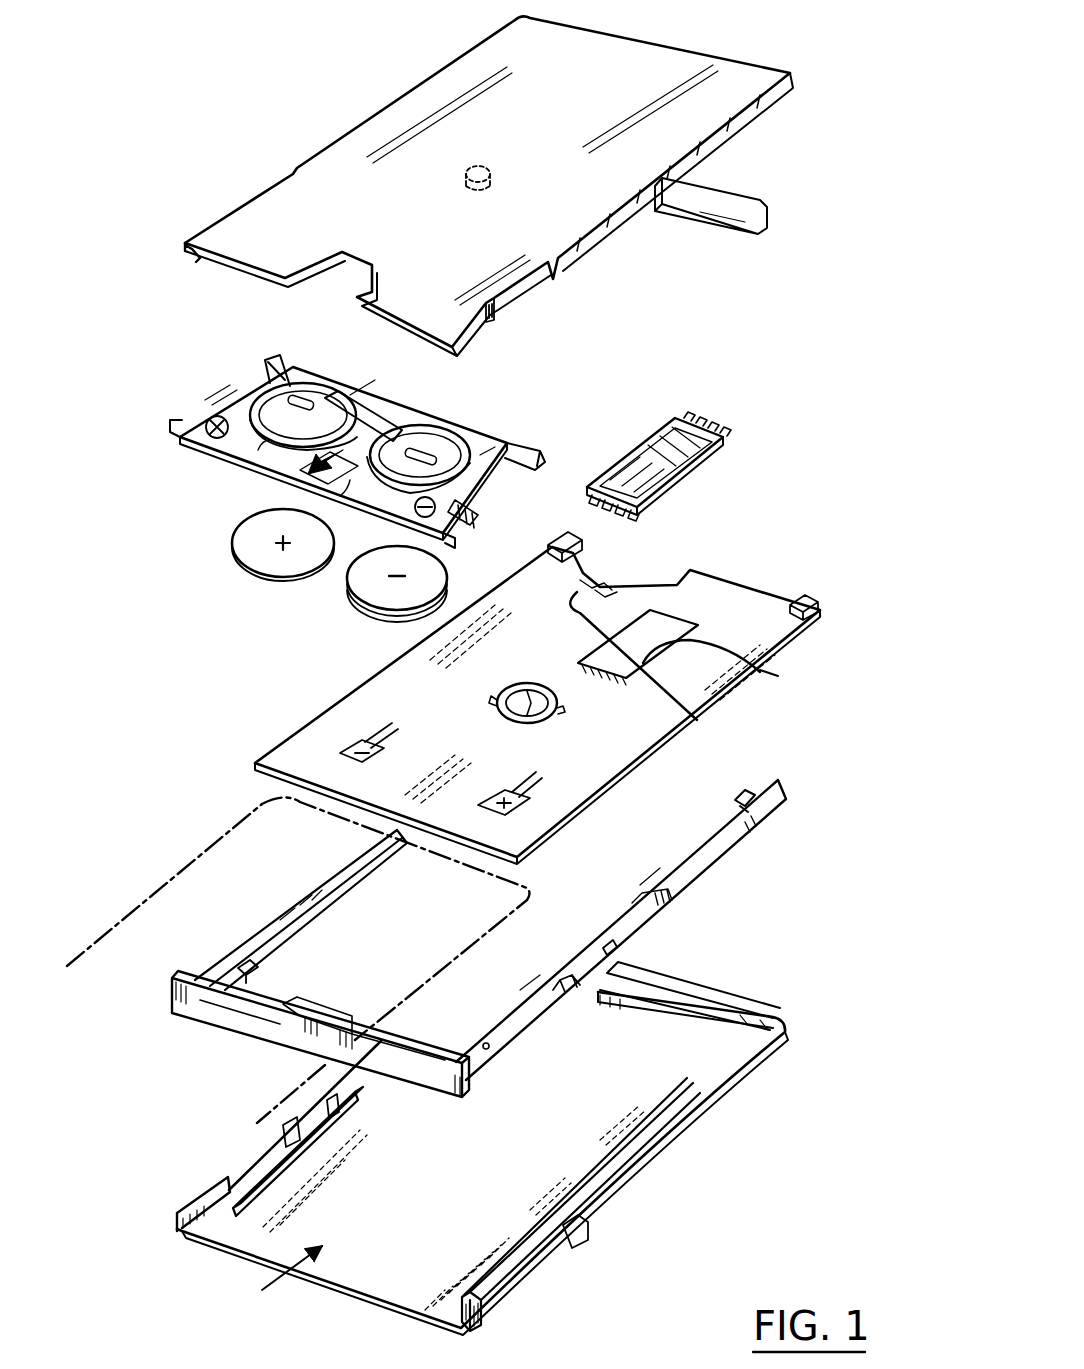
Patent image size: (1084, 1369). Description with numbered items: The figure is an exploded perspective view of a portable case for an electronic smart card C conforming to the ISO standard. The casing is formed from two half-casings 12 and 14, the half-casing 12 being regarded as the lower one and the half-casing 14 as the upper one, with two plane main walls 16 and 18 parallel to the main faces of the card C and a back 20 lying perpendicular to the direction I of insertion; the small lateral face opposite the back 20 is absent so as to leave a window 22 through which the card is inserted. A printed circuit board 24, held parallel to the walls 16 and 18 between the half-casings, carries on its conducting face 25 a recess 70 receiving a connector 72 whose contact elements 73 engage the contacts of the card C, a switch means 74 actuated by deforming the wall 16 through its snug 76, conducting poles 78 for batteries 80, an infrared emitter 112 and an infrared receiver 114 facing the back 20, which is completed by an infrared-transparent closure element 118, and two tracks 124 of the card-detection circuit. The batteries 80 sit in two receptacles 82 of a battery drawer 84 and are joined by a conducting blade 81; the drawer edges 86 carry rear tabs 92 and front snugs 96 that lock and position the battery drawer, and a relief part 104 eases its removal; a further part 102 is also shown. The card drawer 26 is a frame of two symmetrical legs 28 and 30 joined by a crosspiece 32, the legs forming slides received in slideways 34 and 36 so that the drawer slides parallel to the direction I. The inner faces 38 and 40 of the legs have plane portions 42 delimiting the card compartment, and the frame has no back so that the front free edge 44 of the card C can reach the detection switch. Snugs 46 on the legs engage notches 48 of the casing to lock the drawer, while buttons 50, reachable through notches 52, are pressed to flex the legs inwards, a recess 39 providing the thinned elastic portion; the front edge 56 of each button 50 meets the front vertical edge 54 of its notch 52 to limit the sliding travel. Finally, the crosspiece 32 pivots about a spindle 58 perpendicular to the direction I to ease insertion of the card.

The half-casing 12 is at (764, 113).
The half-casing 14 is at (747, 1074).
The plane main wall 16 is at (660, 62).
The plane main wall 18 is at (667, 1037).
The back 20 is at (737, 1022).
The window 22 is at (186, 262).
The printed circuit board 24 is at (278, 737).
The conducting face 25 is at (412, 680).
The drawer 26 is at (193, 1030).
The leg 28 is at (693, 872).
The leg 30 is at (255, 942).
The crosspiece 32 is at (277, 1028).
The slideway 34 is at (648, 1137).
The slideway 36 is at (348, 1110).
The inner face of leg 38 is at (663, 878).
The recess 39 is at (528, 992).
The inner face of leg 40 is at (266, 963).
The plane portions 42 is at (752, 790).
The front free edge 44 is at (338, 818).
The snugs 46 is at (620, 945).
The notches 48 is at (300, 1130).
The buttons 50 is at (590, 1000).
The notches 52 is at (538, 293).
The front vertical edge 54 is at (496, 322).
The front edge 56 is at (553, 997).
The pivoting spindle 58 is at (486, 1050).
The recess 70 is at (697, 720).
The connector 72 is at (697, 468).
The contact elements 73 is at (640, 450).
The switch means 74 is at (527, 693).
The snug 76 is at (470, 190).
The conducting poles 78 is at (493, 790).
The batteries 80 is at (360, 590).
The conducting blade 81 is at (377, 407).
The receptacles 82 is at (258, 450).
The battery drawer 84 is at (200, 460).
The battery drawer edges 86 is at (223, 393).
The tabs 92 is at (282, 358).
The snugs 96 is at (176, 425).
The arrow 102 is at (293, 465).
The relief part 104 is at (272, 462).
The infrared emitter 112 is at (811, 597).
The infrared receiver 114 is at (581, 535).
The closure element 118 is at (740, 190).
The tracks 124 is at (778, 676).
The electronic smart card C is at (213, 845).
The direction of insertion I is at (292, 1287).